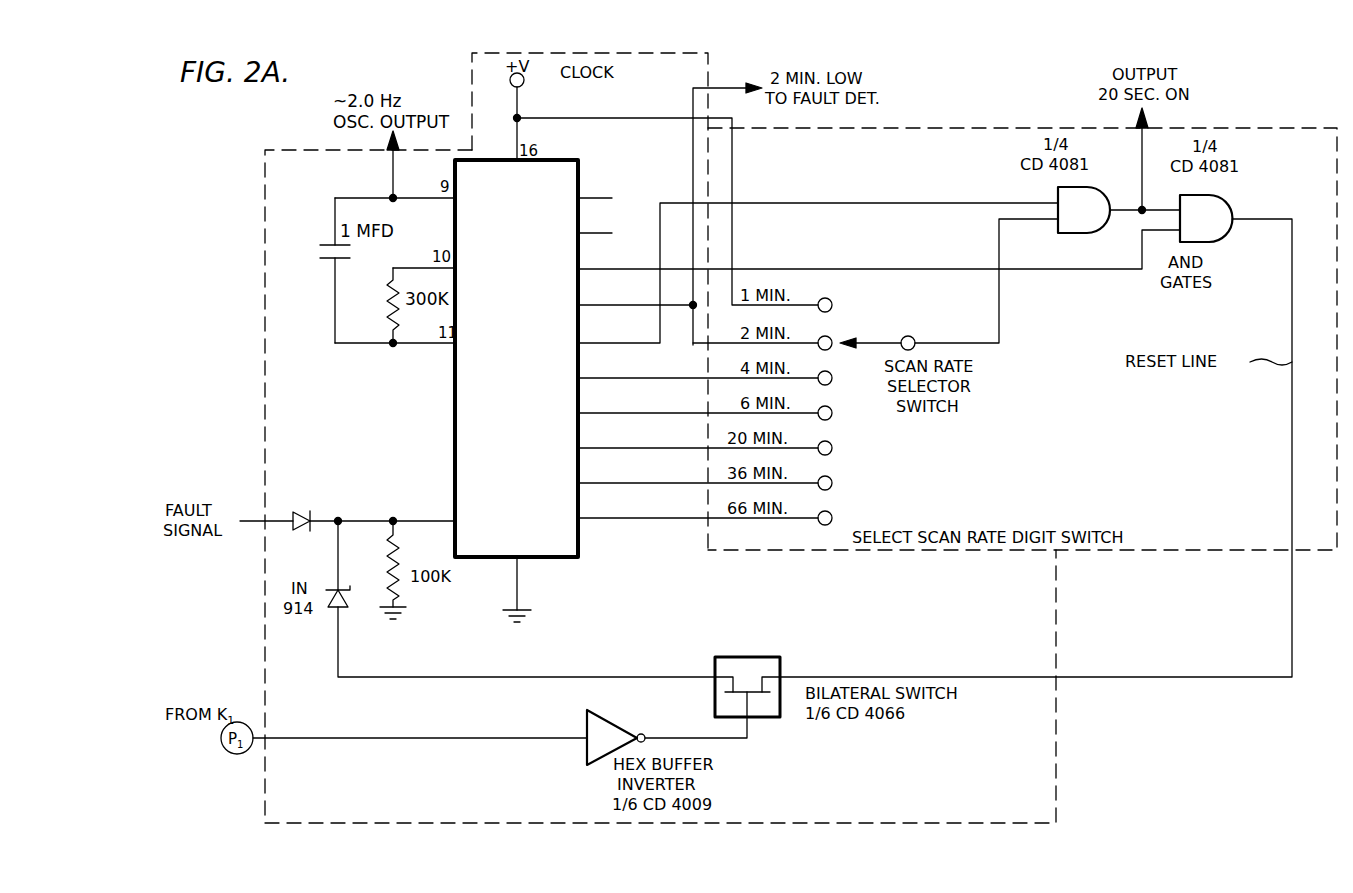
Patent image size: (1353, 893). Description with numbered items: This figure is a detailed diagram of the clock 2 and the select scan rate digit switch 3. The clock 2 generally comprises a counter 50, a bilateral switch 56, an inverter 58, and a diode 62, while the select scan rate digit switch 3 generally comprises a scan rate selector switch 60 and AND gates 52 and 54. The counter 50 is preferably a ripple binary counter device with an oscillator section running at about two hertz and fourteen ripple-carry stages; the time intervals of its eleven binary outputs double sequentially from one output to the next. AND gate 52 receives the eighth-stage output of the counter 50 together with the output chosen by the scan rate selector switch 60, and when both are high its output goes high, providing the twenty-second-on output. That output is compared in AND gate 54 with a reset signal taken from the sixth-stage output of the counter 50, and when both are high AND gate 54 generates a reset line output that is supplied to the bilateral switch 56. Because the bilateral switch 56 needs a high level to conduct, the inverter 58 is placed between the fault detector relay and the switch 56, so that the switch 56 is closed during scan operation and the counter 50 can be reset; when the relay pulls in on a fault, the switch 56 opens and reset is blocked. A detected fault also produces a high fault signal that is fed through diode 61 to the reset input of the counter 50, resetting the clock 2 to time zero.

The clock 2 is at (703, 78).
The select scan rate digit switch 3 is at (1247, 133).
The counter 50 is at (572, 160).
The AND gate 52 is at (1082, 233).
The AND gate 54 is at (1218, 242).
The bilateral switch 56 is at (752, 657).
The inverter 58 is at (619, 722).
The scan rate selector switch 60 is at (884, 336).
The diode 61 is at (304, 512).
The diode 62 is at (346, 598).